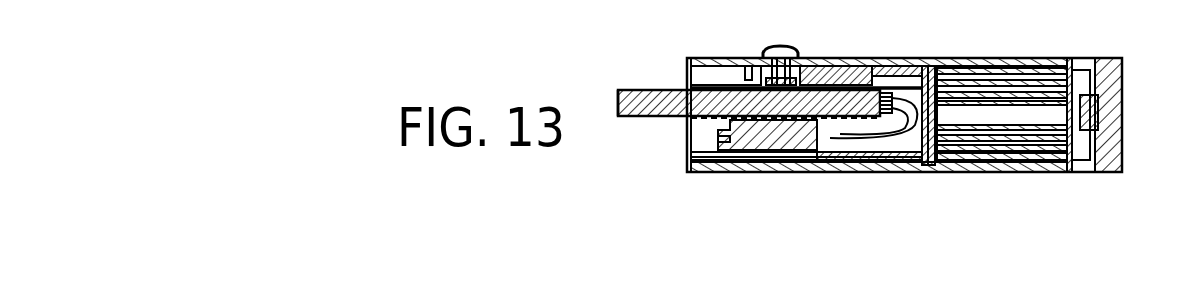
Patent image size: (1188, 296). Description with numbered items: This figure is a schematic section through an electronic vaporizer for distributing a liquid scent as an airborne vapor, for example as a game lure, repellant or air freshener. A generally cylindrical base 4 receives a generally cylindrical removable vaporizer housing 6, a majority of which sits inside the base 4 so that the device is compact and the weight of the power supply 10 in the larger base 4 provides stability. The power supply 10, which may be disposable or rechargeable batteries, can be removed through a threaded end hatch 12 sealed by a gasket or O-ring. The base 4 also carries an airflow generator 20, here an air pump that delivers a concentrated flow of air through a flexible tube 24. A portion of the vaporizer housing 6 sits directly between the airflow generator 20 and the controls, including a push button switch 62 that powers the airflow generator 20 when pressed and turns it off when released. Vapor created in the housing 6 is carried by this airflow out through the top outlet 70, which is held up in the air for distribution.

The base 4 is at (868, 172).
The vaporizer housing 6 is at (646, 117).
The power supply 10 is at (982, 92).
The end hatch 12 is at (1103, 58).
The airflow generator 20 is at (758, 143).
The flexible tube 24 is at (897, 123).
The push button switch 62 is at (789, 46).
The outlet 70 is at (618, 106).